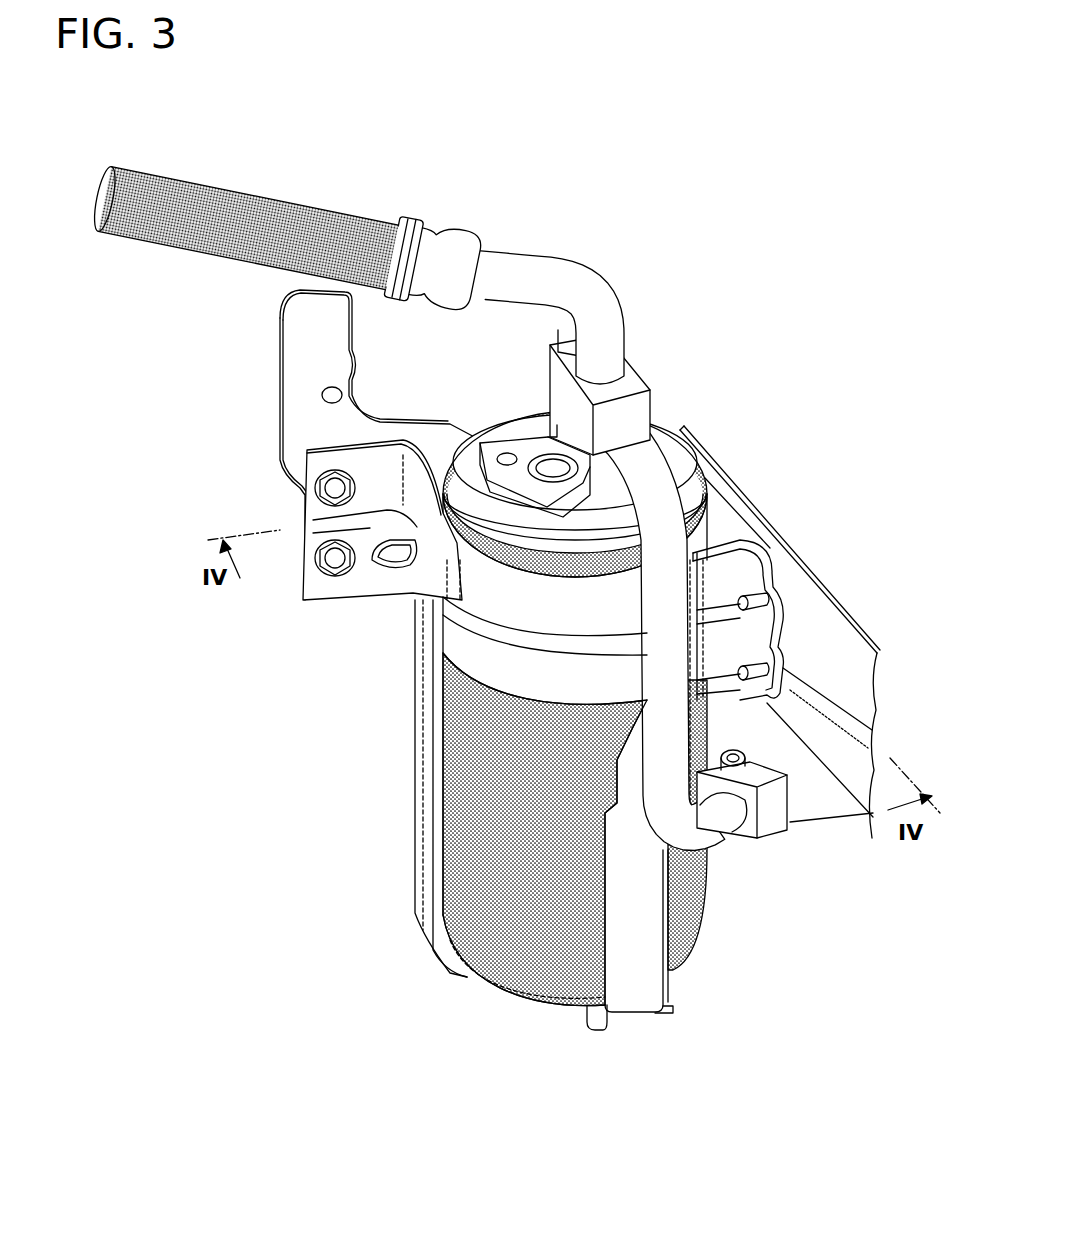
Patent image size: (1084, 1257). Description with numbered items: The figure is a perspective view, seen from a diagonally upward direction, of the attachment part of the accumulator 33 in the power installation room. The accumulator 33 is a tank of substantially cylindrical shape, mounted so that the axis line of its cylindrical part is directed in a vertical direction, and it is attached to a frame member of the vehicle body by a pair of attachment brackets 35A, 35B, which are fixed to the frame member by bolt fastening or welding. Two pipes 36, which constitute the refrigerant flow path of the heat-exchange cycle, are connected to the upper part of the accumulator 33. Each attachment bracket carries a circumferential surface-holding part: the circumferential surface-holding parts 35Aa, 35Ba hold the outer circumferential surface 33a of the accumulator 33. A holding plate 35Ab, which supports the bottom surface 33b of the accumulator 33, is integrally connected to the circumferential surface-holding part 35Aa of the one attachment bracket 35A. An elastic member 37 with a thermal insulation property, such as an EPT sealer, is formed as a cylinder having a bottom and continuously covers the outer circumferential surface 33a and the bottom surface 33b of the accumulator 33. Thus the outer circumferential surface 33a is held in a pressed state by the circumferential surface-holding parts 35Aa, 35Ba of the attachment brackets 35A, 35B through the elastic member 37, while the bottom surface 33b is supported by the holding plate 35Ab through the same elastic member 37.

The accumulator 33 is at (625, 699).
The outer circumferential surface 33a is at (707, 880).
The bottom surface 33b is at (500, 985).
The attachment bracket 35A is at (577, 781).
The circumferential surface-holding part 35Aa is at (480, 653).
The holding plate 35Ab is at (595, 1023).
The attachment bracket 35B is at (798, 615).
The circumferential surface-holding part 35Ba is at (693, 457).
The pipe 36 is at (562, 287).
The elastic member 37 is at (432, 742).